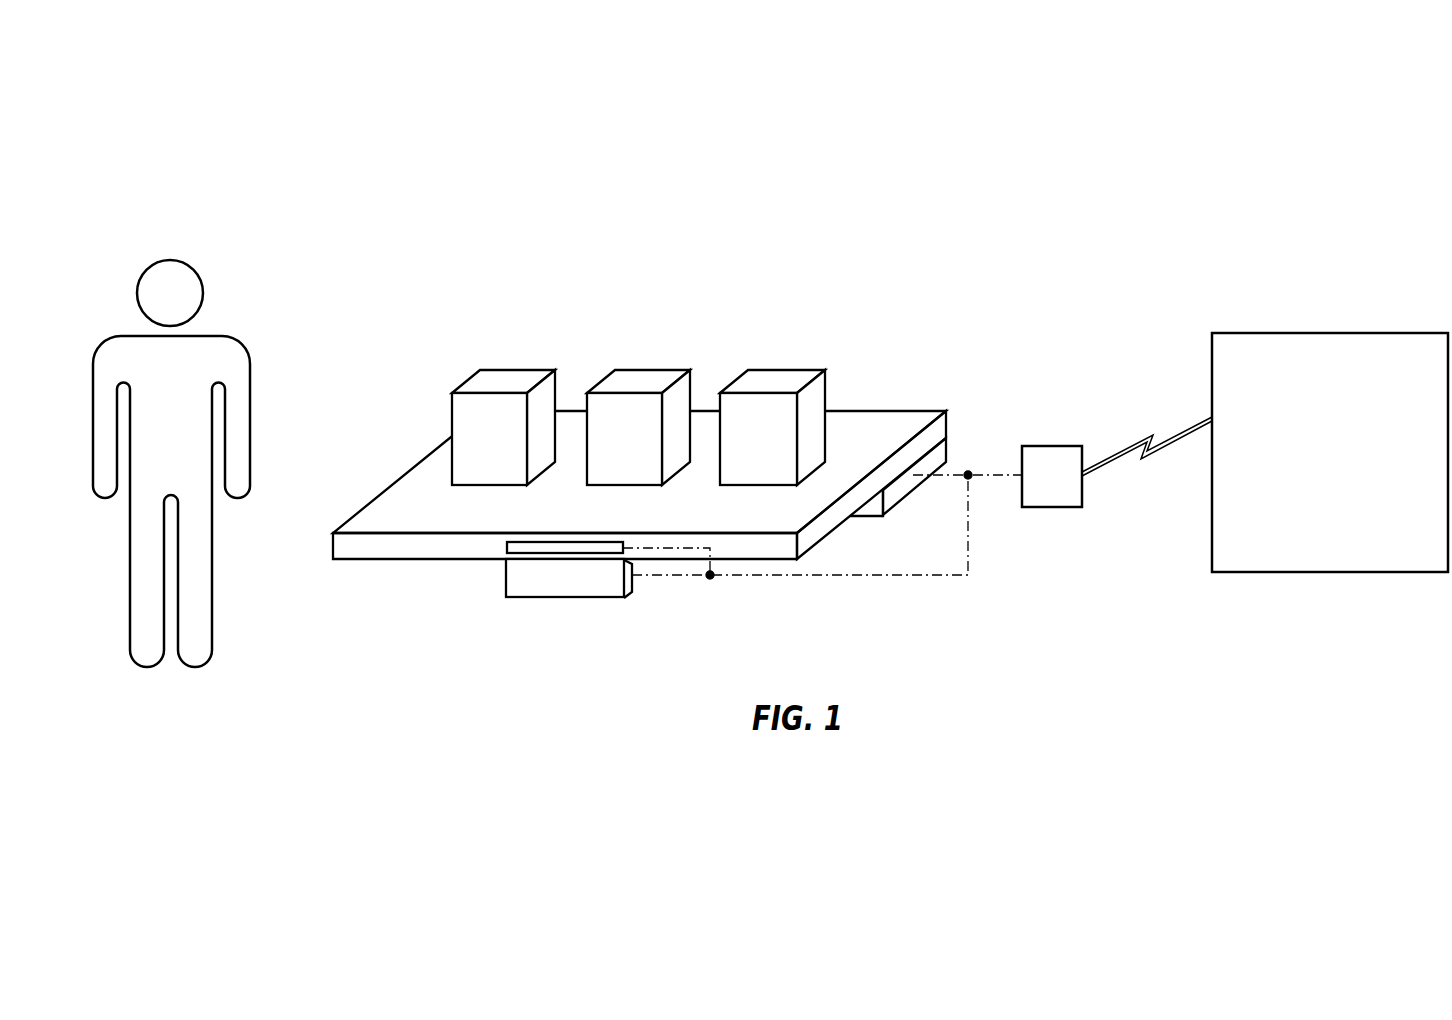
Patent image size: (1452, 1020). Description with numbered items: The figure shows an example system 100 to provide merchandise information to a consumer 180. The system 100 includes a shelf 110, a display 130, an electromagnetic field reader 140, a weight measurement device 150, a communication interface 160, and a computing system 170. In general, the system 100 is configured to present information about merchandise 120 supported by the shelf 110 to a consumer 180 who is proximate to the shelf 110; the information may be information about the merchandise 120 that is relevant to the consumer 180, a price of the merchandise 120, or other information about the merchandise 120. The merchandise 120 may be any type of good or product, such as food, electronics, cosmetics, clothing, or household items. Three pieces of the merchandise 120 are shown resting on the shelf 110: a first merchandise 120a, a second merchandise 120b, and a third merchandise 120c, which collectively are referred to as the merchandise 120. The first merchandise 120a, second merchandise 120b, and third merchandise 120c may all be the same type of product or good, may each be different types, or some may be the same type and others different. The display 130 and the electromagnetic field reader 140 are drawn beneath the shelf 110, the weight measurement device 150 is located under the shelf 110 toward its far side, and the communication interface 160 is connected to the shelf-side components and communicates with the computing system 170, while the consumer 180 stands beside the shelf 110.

The system 100 is at (1334, 125).
The shelf 110 is at (912, 418).
The merchandise 120 is at (610, 391).
The first merchandise 120a is at (512, 452).
The second merchandise 120b is at (647, 452).
The third merchandise 120c is at (781, 452).
The display 130 is at (553, 598).
The electromagnetic field reader 140 is at (505, 545).
The weight measurement device 150 is at (948, 450).
The communication interface 160 is at (1070, 488).
The computing system 170 is at (1348, 478).
The consumer 180 is at (240, 350).